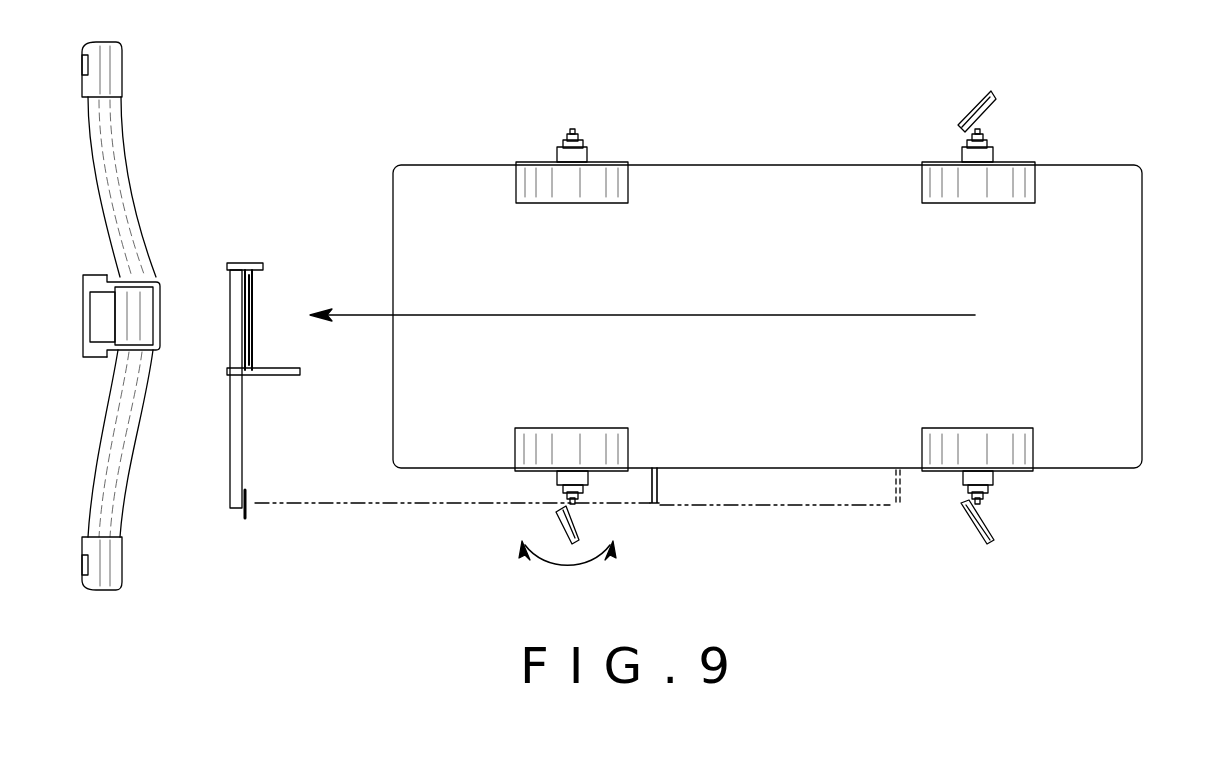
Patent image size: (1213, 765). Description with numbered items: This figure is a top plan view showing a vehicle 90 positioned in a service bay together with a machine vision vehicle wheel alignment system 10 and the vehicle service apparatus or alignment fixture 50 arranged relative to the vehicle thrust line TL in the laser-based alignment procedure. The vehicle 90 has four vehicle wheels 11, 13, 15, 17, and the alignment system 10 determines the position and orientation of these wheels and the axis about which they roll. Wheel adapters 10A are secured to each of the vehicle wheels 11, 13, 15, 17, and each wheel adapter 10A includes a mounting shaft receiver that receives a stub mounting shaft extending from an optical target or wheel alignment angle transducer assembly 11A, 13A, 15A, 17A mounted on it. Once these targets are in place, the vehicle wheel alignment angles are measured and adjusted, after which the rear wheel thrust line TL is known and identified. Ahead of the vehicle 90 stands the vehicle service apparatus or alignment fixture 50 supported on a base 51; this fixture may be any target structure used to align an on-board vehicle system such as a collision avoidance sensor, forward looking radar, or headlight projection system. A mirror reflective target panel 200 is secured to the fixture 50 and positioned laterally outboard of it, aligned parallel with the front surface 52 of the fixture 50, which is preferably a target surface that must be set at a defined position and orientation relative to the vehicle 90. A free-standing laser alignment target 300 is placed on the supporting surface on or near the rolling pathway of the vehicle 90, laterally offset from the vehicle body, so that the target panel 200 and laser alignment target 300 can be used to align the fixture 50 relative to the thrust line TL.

The machine vision vehicle wheel alignment system 10 is at (158, 157).
The wheel adapter 10A is at (588, 155).
The vehicle wheel 11 is at (565, 445).
The optical target 11A is at (542, 515).
The vehicle wheel 13 is at (958, 443).
The optical target 13A is at (979, 547).
The vehicle wheel 15 is at (970, 192).
The optical target 15A is at (940, 104).
The vehicle wheel 17 is at (565, 192).
The optical target 17A is at (547, 130).
The vehicle service apparatus or alignment fixture 50 is at (265, 360).
The base 51 is at (272, 376).
The front surface 52 is at (253, 300).
The vehicle 90 is at (1143, 262).
The mirror reflective target panel 200 is at (233, 457).
The laser alignment target 300 is at (659, 505).
The thrust line TL is at (512, 318).